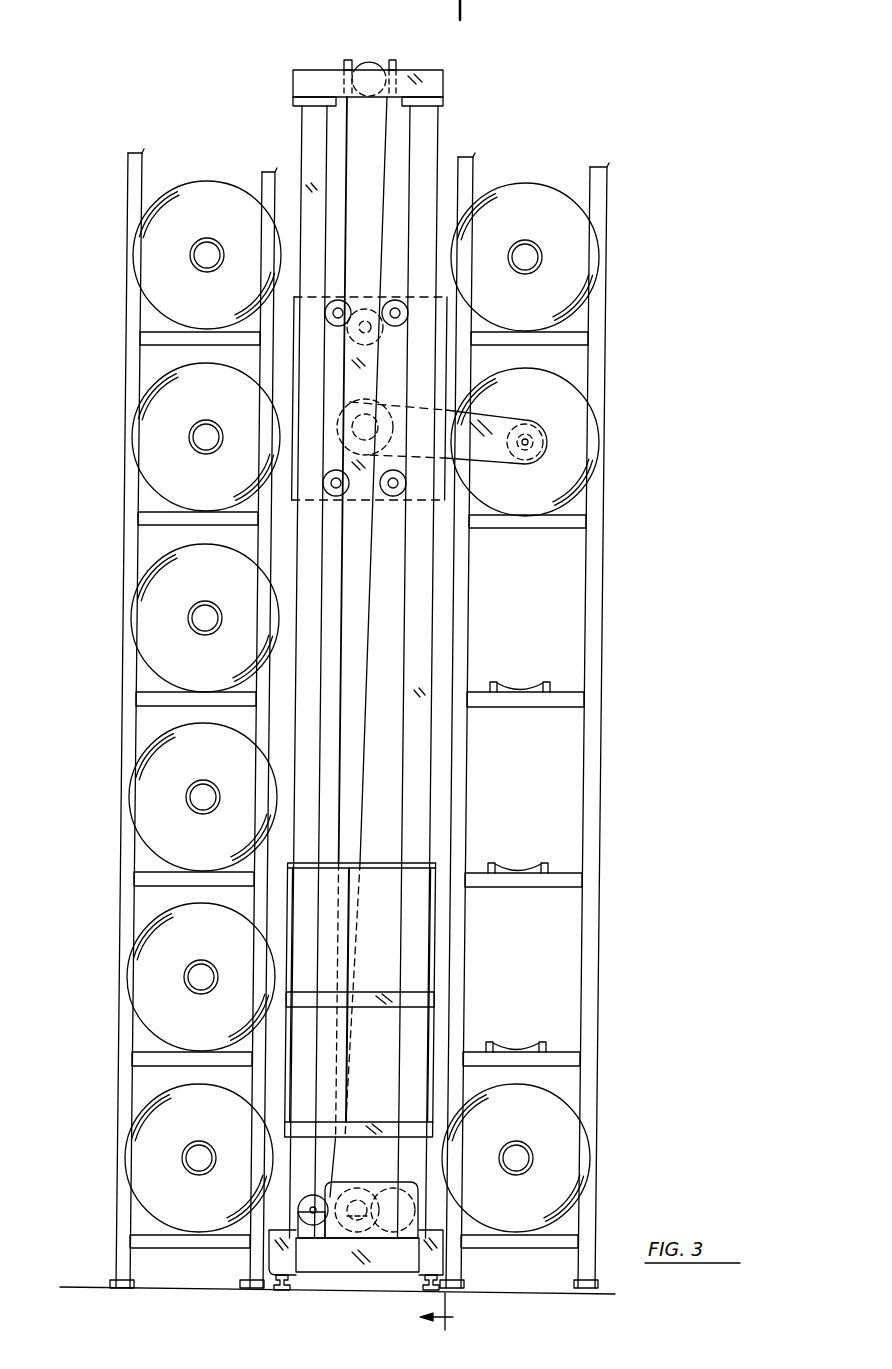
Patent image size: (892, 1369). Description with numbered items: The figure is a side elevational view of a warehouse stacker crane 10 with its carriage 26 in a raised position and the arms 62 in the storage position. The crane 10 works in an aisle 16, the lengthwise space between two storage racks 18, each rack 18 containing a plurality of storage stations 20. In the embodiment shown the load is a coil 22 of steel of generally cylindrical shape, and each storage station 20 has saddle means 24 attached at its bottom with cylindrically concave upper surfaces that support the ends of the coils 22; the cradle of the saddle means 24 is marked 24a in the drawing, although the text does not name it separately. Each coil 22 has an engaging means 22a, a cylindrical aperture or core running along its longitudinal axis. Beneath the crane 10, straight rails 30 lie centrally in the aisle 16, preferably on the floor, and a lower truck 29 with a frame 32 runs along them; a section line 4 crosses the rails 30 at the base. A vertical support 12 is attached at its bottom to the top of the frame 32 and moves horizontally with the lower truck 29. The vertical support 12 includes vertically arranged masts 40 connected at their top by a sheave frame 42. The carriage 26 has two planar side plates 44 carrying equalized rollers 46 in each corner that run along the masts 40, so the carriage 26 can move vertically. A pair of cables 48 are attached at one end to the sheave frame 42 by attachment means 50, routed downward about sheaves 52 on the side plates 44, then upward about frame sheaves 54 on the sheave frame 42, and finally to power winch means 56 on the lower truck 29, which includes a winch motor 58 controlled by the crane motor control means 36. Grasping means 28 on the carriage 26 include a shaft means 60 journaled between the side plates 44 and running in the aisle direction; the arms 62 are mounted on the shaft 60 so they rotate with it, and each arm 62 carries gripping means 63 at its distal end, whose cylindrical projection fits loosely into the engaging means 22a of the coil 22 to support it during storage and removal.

The section line 4- 4 is at (436, 1319).
The warehouse stacker crane 10 is at (281, 72).
The vertical support 12 is at (384, 643).
The aisle 16 is at (290, 182).
The storage racks 18 is at (122, 194).
The storage station 20 is at (568, 624).
The coil 22 is at (170, 380).
The engaging means 22a is at (194, 446).
The saddle means 24 is at (540, 522).
The cradle 24a is at (548, 682).
The carriage 26 is at (285, 511).
The grasping means 28 is at (536, 408).
The lower truck 29 is at (397, 1278).
The rails 30 is at (281, 1292).
The frame 32 is at (352, 1266).
The crane motor control means 36 is at (370, 855).
The masts 40 is at (302, 115).
The sheave frame 42 is at (443, 80).
The side plates 44 is at (447, 503).
The equalized rollers 46 is at (390, 300).
The cables 48 is at (382, 238).
The attachment means 50 is at (363, 62).
The sheaves 52 is at (366, 302).
The frame sheaves 54 is at (347, 60).
The power winch means 56 is at (356, 1170).
The winch motor 58 is at (376, 1192).
The shaft means 60 is at (388, 400).
The arms 62 is at (485, 398).
The gripping means 63 is at (548, 448).